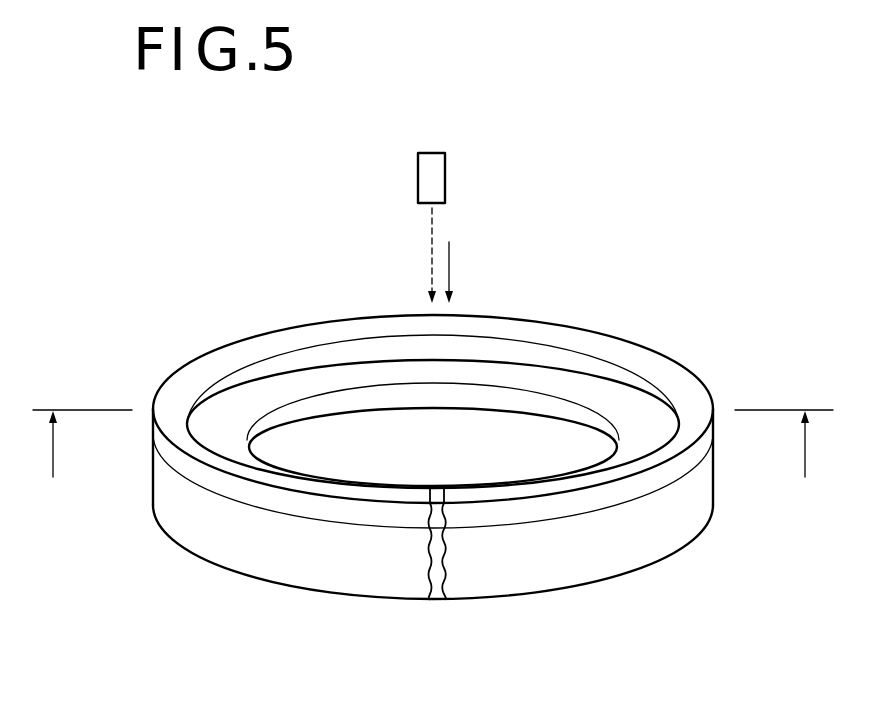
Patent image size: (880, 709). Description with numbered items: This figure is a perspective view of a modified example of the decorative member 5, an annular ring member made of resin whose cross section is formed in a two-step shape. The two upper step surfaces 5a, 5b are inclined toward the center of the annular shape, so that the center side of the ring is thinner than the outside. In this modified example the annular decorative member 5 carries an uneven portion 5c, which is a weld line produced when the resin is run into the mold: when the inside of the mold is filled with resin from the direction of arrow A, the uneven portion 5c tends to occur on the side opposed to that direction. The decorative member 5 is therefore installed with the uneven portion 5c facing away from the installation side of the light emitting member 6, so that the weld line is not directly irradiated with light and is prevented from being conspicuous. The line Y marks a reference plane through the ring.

The decorative member 5 is at (445, 427).
The step surface 5a is at (254, 468).
The step surface 5b is at (645, 363).
The uneven portion 5c is at (435, 600).
The light emitting member 6 is at (445, 175).
The arrow A is at (449, 260).
The section line Y is at (433, 462).